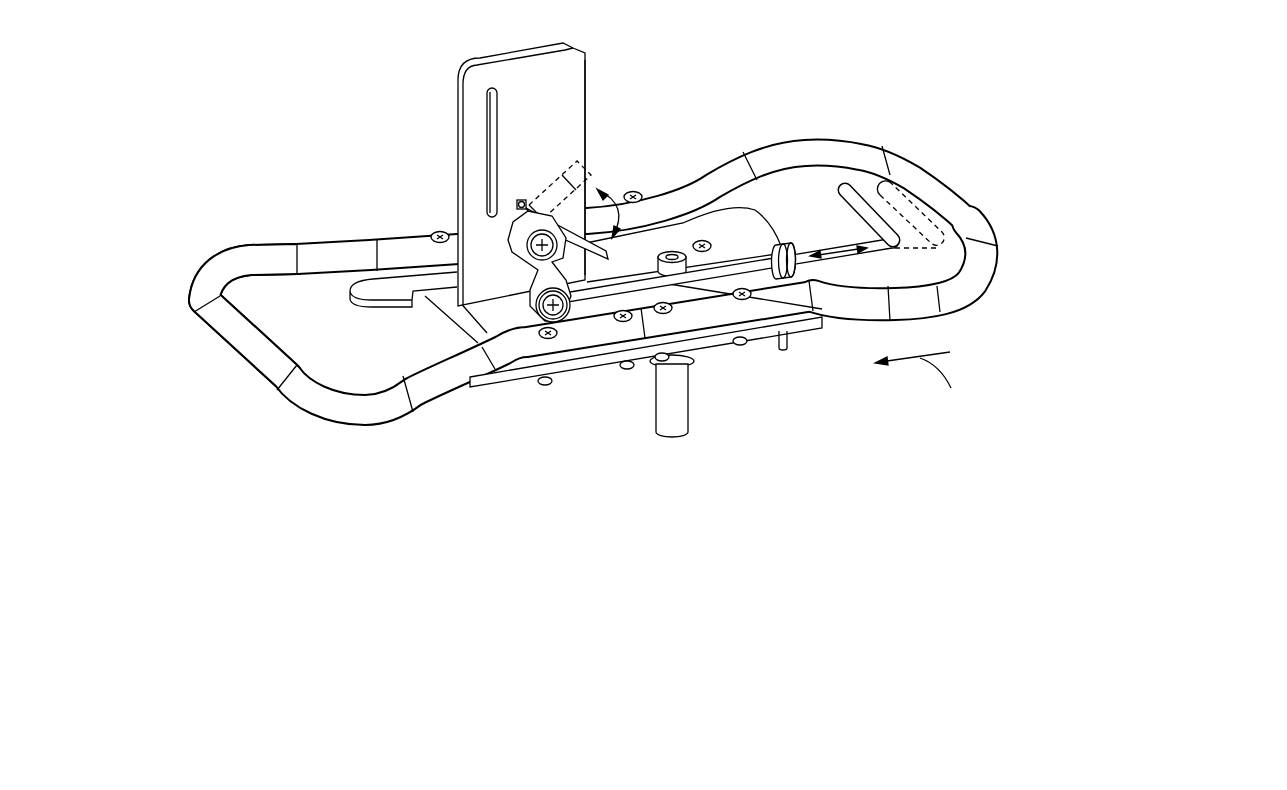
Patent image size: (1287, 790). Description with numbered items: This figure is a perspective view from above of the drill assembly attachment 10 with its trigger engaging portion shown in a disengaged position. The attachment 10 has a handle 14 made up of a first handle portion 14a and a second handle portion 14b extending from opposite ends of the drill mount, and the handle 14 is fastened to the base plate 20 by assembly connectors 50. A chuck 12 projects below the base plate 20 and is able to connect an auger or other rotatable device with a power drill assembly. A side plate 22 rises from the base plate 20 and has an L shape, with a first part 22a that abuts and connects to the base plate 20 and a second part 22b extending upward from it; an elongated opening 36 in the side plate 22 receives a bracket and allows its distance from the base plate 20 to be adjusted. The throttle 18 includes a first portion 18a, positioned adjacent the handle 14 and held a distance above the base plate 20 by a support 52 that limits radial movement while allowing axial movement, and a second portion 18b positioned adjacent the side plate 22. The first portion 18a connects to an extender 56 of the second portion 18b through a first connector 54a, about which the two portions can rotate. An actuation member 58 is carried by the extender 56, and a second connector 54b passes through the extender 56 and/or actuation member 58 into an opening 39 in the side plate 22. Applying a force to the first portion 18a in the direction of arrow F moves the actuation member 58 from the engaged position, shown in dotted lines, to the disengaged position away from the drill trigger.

The drill assembly attachment 10 is at (272, 80).
The chuck 12 is at (681, 405).
The handle 14 is at (352, 401).
The first handle portion 14a is at (848, 150).
The second handle portion 14b is at (222, 262).
The throttle 18 is at (845, 188).
The first portion of the throttle 18a is at (925, 267).
The second portion of the throttle 18b is at (556, 165).
The base plate 20 is at (744, 222).
The side plate 22 is at (515, 53).
The first part of the side plate 22a is at (448, 278).
The second part of the side plate 22b is at (580, 66).
The opening 36 is at (492, 98).
The opening 39 is at (519, 206).
The assembly connectors 50 is at (626, 368).
The support 52 is at (791, 248).
The first connector 54a is at (549, 320).
The second connector 54b is at (533, 236).
The extender 56 is at (532, 258).
The actuation member 58 is at (598, 190).